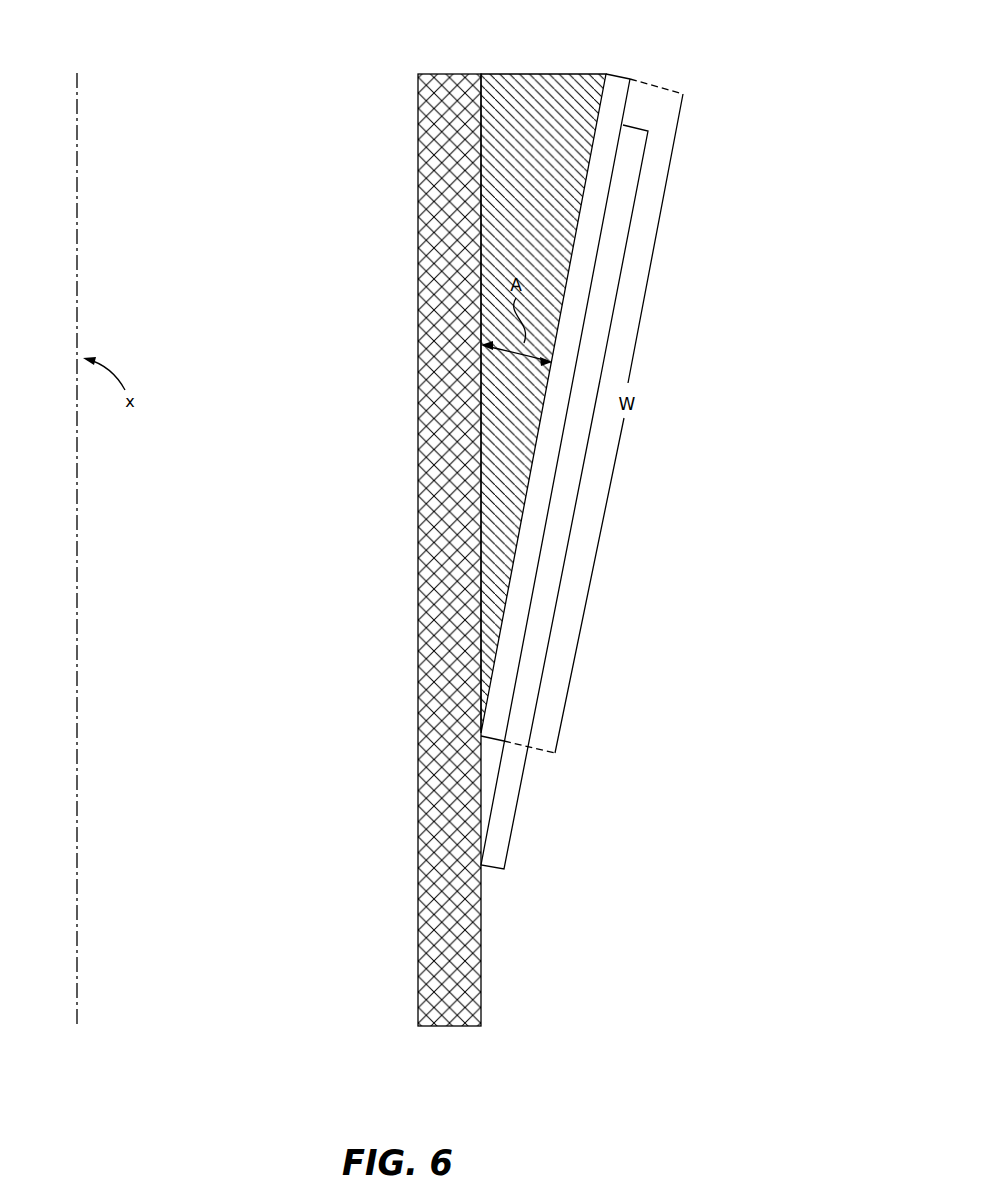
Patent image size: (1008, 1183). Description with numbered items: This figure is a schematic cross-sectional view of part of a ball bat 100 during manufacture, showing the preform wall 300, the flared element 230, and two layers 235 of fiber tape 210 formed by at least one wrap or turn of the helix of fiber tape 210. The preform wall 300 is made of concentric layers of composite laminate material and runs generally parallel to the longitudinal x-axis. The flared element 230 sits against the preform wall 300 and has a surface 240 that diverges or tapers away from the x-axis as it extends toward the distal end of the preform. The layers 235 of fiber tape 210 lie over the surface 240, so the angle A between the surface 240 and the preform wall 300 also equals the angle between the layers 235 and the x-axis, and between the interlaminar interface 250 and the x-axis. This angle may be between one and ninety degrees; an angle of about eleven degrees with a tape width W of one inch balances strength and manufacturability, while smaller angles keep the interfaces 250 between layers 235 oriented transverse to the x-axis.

The ball bat 100 is at (756, 80).
The fiber tape 210 is at (622, 86).
The flared element 230 is at (544, 85).
The layers of fiber tape 235 is at (593, 207).
The surface of the flared element 240 is at (598, 109).
The interlaminar interface 250 is at (537, 589).
The preform wall 300 is at (418, 193).